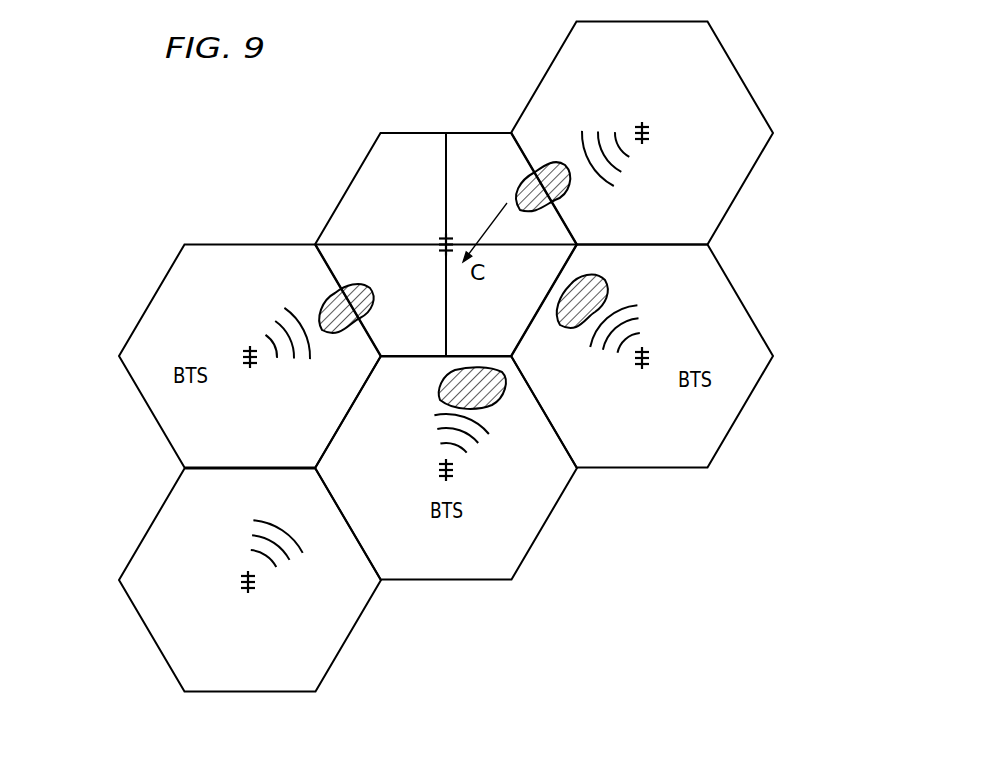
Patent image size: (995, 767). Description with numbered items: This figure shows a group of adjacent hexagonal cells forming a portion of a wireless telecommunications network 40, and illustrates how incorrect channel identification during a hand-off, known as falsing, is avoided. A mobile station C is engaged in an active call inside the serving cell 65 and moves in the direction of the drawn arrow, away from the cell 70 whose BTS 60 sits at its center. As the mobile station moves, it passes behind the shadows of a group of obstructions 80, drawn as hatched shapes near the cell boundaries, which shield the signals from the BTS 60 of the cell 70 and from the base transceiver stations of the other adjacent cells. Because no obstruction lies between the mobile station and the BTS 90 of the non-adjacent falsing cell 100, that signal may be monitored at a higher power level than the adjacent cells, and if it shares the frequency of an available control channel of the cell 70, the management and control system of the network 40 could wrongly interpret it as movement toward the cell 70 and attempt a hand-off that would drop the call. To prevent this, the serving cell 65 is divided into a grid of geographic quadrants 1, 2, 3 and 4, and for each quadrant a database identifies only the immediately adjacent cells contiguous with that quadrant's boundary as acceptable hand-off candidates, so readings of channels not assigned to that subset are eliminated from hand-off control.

The wireless telecommunications network 40 is at (445, 118).
The BTS 60 is at (667, 129).
The serving cell 65 is at (353, 197).
The cell 70 is at (748, 60).
The obstructions 80 is at (446, 390).
The BTS 90 is at (228, 598).
The falsing cell 100 is at (148, 655).
The geographic quadrant 1 is at (404, 165).
The geographic quadrant 2 is at (488, 167).
The geographic quadrant 3 is at (404, 322).
The geographic quadrant 4 is at (490, 323).